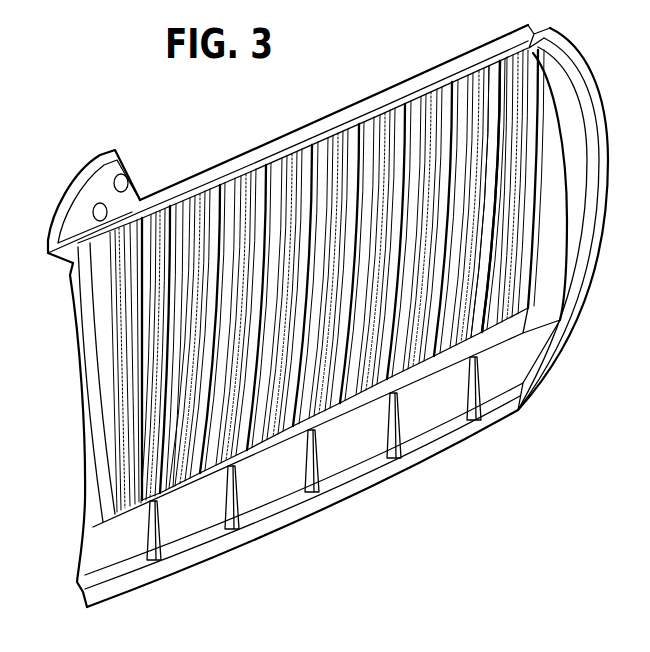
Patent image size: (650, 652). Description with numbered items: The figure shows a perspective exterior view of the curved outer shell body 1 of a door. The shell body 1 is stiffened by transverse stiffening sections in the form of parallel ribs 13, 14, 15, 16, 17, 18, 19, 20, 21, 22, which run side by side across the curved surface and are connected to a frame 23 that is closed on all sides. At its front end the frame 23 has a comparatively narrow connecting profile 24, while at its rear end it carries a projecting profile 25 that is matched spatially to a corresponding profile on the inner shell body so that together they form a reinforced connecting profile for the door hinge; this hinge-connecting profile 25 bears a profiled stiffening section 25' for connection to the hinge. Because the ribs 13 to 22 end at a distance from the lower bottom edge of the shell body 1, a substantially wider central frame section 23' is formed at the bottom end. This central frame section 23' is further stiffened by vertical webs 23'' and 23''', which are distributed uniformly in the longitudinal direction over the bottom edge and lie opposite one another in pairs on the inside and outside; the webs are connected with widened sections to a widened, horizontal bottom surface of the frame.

The outer shell body 1 is at (42, 185).
The rib 13 is at (140, 280).
The rib 14 is at (183, 313).
The rib 15 is at (220, 190).
The rib 16 is at (266, 172).
The rib 17 is at (300, 160).
The rib 18 is at (346, 140).
The rib 19 is at (385, 122).
The rib 20 is at (422, 100).
The rib 21 is at (460, 82).
The rib 22 is at (492, 64).
The frame 23 is at (303, 457).
The central frame section 23' is at (150, 558).
The vertical web 23'' is at (337, 469).
The vertical web 23''' is at (481, 415).
The connecting profile 24 is at (90, 382).
The projecting profile 25 is at (94, 173).
The profiled stiffening section 25' is at (134, 182).